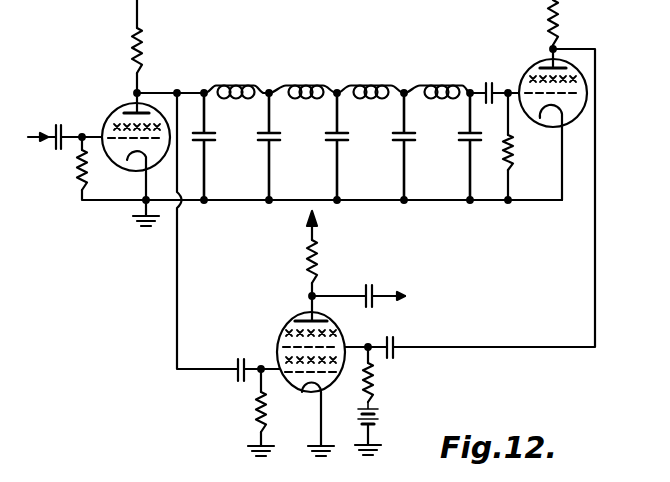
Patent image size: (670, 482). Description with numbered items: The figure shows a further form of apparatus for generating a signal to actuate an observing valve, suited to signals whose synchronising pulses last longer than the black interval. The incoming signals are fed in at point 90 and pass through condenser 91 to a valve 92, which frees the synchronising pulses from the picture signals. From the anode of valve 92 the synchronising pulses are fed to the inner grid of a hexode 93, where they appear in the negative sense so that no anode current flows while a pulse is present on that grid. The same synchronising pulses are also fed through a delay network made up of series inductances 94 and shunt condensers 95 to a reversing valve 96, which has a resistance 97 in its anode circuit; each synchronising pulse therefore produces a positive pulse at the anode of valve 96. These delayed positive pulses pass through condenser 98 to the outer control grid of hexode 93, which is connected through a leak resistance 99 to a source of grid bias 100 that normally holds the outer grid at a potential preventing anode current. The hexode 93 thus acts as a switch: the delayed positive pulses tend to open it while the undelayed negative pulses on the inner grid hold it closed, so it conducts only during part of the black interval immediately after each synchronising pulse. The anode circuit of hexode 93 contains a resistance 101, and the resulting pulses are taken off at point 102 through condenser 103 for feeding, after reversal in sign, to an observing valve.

The input point 90 is at (33, 136).
The condenser 91 is at (58, 150).
The valve 92 is at (113, 117).
The hexode 93 is at (287, 326).
The series inductances 94 is at (290, 88).
The shunt condensers 95 is at (257, 140).
The reversing valve 96 is at (567, 121).
The resistance 97 is at (548, 15).
The condenser 98 is at (395, 339).
The leak resistance 99 is at (374, 381).
The source of grid bias 100 is at (380, 414).
The resistance 101 is at (308, 262).
The output point 102 is at (431, 295).
The condenser 103 is at (367, 288).